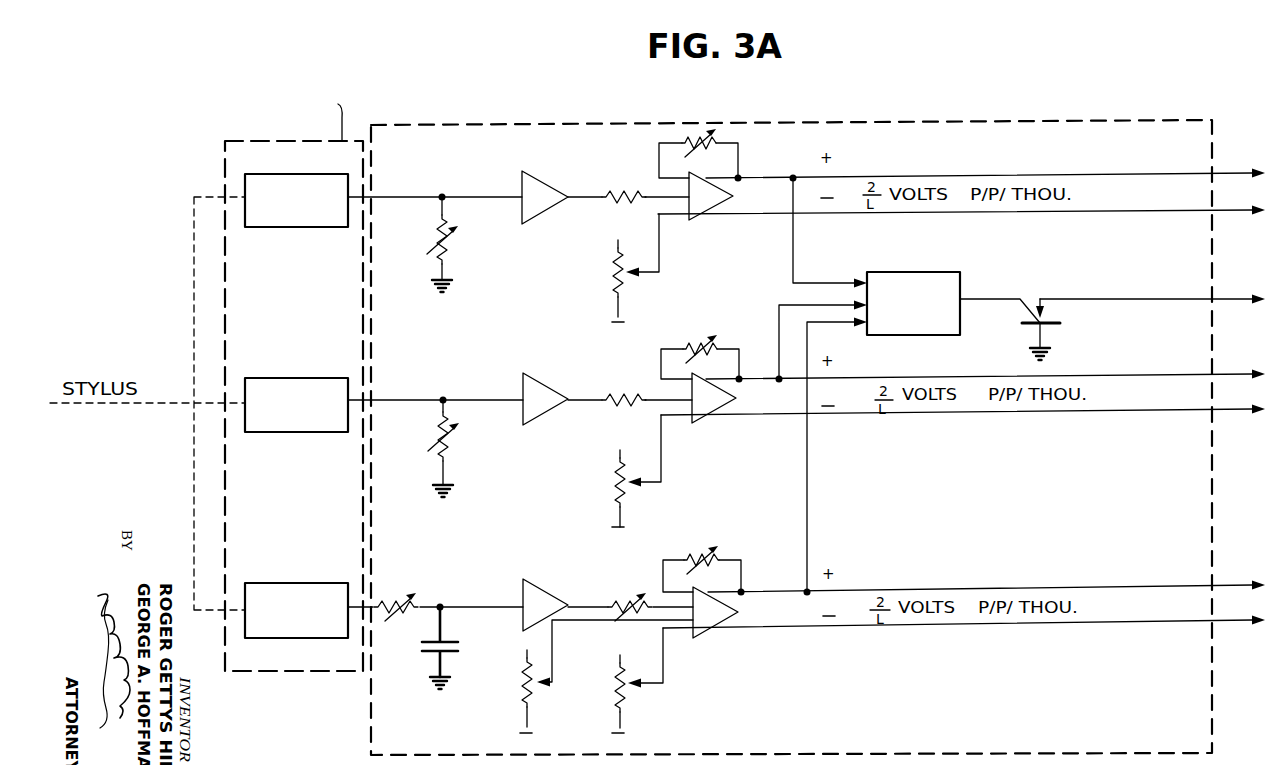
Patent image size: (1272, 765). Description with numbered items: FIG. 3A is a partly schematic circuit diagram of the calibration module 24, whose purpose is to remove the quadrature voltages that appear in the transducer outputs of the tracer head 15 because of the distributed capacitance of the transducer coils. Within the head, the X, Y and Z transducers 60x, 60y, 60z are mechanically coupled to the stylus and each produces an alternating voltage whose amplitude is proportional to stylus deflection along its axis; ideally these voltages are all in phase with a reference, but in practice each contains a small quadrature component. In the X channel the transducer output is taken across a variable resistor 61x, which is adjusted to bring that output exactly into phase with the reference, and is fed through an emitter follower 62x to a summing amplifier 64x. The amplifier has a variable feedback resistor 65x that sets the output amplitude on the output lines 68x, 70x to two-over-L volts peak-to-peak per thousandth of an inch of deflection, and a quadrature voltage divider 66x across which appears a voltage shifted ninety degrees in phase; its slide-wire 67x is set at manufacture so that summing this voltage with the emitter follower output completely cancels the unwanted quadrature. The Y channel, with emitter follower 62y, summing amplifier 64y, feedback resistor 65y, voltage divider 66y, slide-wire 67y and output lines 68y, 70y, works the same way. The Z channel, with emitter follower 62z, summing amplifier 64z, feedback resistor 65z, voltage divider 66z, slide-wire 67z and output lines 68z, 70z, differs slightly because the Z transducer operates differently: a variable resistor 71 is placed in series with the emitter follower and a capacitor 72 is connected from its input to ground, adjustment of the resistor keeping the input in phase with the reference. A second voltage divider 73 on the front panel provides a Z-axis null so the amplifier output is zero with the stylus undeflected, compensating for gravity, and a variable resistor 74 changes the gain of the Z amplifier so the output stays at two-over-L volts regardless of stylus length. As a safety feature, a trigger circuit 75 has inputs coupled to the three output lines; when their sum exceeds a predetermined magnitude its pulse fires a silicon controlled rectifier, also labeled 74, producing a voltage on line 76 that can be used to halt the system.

The head 15 is at (222, 153).
The calibration module 24 is at (900, 119).
The X transducer 60x is at (263, 174).
The Y transducer 60y is at (280, 378).
The Z transducer 60z is at (280, 583).
The variable resistor 61x is at (448, 244).
The emitter follower 62x is at (454, 450).
The emitter follower 62y is at (545, 390).
The emitter follower 62z is at (541, 593).
The summing amplifier 64x is at (701, 220).
The summing amplifier 64y is at (706, 423).
The summing amplifier 64z is at (701, 636).
The variable feedback resistor 65x is at (675, 140).
The variable feedback resistor 65y is at (689, 341).
The variable feedback resistor 65z is at (689, 556).
The quadrature voltage divider 66x is at (611, 295).
The quadrature voltage divider 66y is at (612, 495).
The quadrature voltage divider 66z is at (612, 682).
The slide-wire 67x is at (636, 280).
The slide-wire 67y is at (636, 483).
The slide-wire 67z is at (634, 688).
The output line 68x is at (762, 178).
The output line 68y is at (762, 379).
The output line 68z is at (785, 592).
The output line 70x is at (805, 214).
The output line 70y is at (822, 415).
The output line 70z is at (797, 628).
The variable resistor 71 is at (416, 618).
The capacitor 72 is at (458, 642).
The Z axis null voltage divider 73 is at (520, 685).
The variable resistor 74 is at (609, 601).
The trigger circuit 75 is at (920, 272).
The line 76 is at (1075, 299).